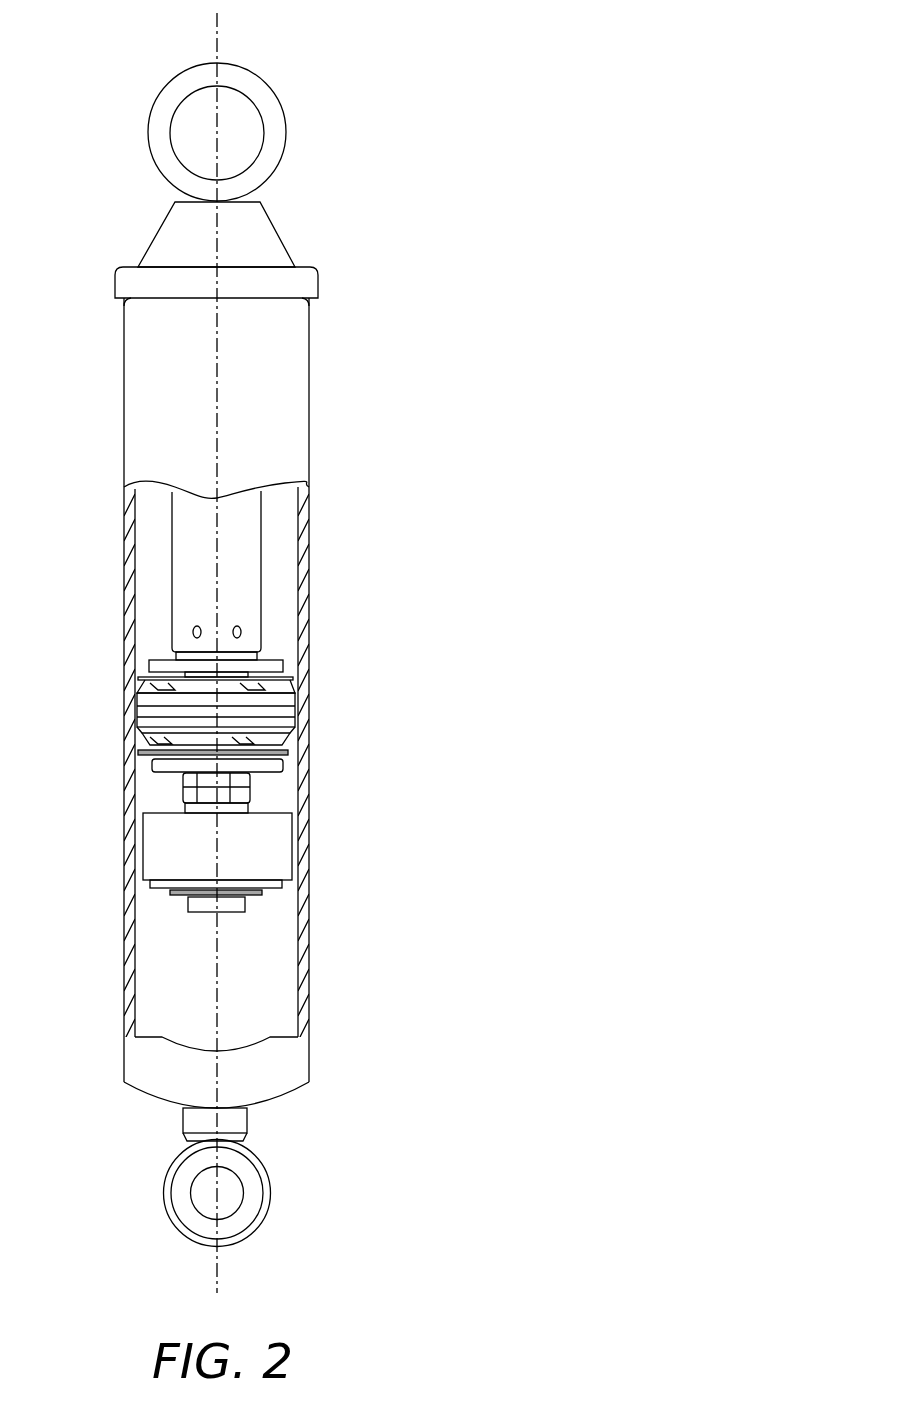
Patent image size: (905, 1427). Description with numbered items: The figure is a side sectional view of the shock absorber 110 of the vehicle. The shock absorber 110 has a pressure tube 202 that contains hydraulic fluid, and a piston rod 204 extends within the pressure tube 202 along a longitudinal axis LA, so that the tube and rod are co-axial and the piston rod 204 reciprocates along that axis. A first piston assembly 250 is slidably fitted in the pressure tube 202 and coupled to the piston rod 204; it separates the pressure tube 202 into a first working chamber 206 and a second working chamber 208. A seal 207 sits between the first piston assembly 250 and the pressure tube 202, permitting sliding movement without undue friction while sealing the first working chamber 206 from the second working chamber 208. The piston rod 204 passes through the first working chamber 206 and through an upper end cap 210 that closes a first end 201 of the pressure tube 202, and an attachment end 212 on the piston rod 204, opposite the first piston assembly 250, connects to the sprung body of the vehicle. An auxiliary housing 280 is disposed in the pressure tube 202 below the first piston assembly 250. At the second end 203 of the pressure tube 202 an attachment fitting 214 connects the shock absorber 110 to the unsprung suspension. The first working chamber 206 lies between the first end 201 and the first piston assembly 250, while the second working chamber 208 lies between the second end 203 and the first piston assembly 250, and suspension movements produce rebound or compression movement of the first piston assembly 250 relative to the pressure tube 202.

The shock absorber 110 is at (500, 25).
The longitudinal axis LA is at (222, 25).
The attachment end 212 is at (273, 132).
The upper end cap 210 is at (258, 236).
The first end 201 is at (332, 302).
The pressure tube 202 is at (309, 368).
The first working chamber 206 is at (287, 520).
The piston rod 204 is at (261, 568).
The first piston assembly 250 is at (226, 683).
The seal 207 is at (280, 703).
The auxiliary housing 280 is at (152, 795).
The second working chamber 208 is at (277, 973).
The second end 203 is at (333, 1062).
The attachment fitting 214 is at (270, 1193).